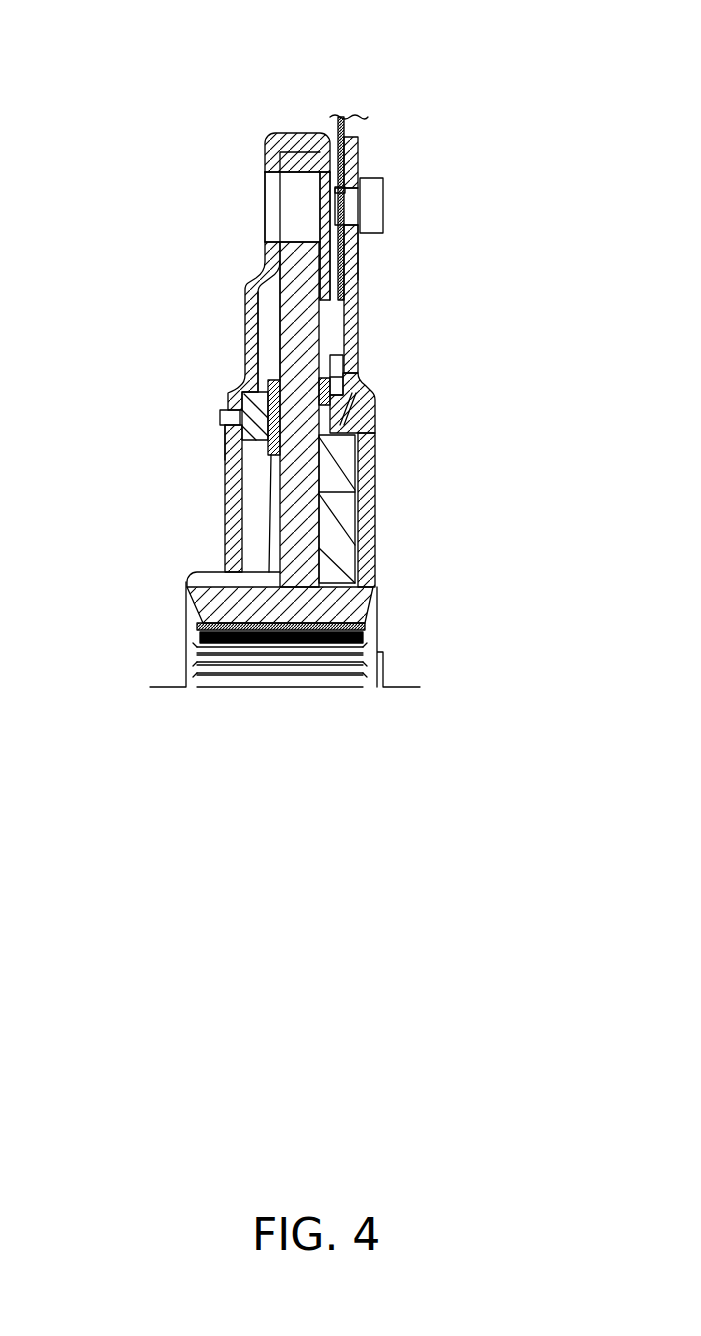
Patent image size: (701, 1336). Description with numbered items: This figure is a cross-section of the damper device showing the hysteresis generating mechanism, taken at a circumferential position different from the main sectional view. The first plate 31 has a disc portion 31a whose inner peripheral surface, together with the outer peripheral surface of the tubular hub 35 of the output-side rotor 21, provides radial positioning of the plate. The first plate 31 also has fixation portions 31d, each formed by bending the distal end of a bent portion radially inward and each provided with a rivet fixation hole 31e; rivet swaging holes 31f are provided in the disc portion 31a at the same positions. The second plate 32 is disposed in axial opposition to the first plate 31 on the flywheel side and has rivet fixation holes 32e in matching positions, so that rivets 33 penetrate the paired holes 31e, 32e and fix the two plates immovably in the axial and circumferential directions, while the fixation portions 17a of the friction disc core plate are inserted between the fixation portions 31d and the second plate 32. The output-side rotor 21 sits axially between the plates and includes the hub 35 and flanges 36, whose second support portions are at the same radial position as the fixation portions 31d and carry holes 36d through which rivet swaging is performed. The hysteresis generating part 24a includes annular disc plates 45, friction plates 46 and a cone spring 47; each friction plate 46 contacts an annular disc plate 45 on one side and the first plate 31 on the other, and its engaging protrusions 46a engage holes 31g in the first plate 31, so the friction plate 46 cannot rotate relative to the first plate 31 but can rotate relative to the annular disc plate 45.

The fixation portion 17a is at (365, 143).
The output-side rotor 21 is at (183, 610).
The hysteresis generating part 24a is at (275, 372).
The first plate 31 is at (243, 340).
The disc portion 31a is at (232, 462).
The fixation portion 31d is at (358, 252).
The rivet fixation hole 31e is at (302, 170).
The rivet swaging hole 31f is at (265, 185).
The hole 31g is at (228, 437).
The second plate 32 is at (363, 343).
The rivet fixation hole 32e is at (352, 188).
The rivet 33 is at (373, 208).
The hub 35 is at (363, 594).
The flange 36 is at (295, 525).
The hole 36d is at (280, 242).
The annular disc plate 45 is at (283, 478).
The friction plate 46 is at (225, 393).
The engaging protrusion 46a is at (220, 418).
The cone spring 47 is at (372, 412).